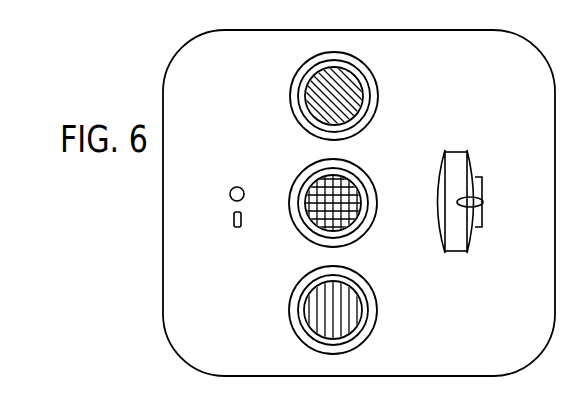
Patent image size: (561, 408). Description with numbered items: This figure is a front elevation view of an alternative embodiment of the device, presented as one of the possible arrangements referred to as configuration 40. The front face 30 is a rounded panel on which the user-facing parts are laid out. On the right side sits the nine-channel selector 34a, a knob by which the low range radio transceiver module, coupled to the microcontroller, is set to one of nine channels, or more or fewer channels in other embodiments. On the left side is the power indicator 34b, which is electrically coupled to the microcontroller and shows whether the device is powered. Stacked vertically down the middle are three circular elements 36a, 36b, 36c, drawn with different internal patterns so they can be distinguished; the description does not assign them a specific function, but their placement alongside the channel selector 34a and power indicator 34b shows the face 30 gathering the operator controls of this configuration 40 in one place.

The control unit housing 30 is at (145, 76).
The 9-channel selector 34a is at (455, 162).
The power indicator 34b is at (221, 217).
The first connector port 36a is at (348, 83).
The second connector port 36b is at (322, 193).
The third connector port 36c is at (348, 301).
The configuration 40 is at (124, 401).